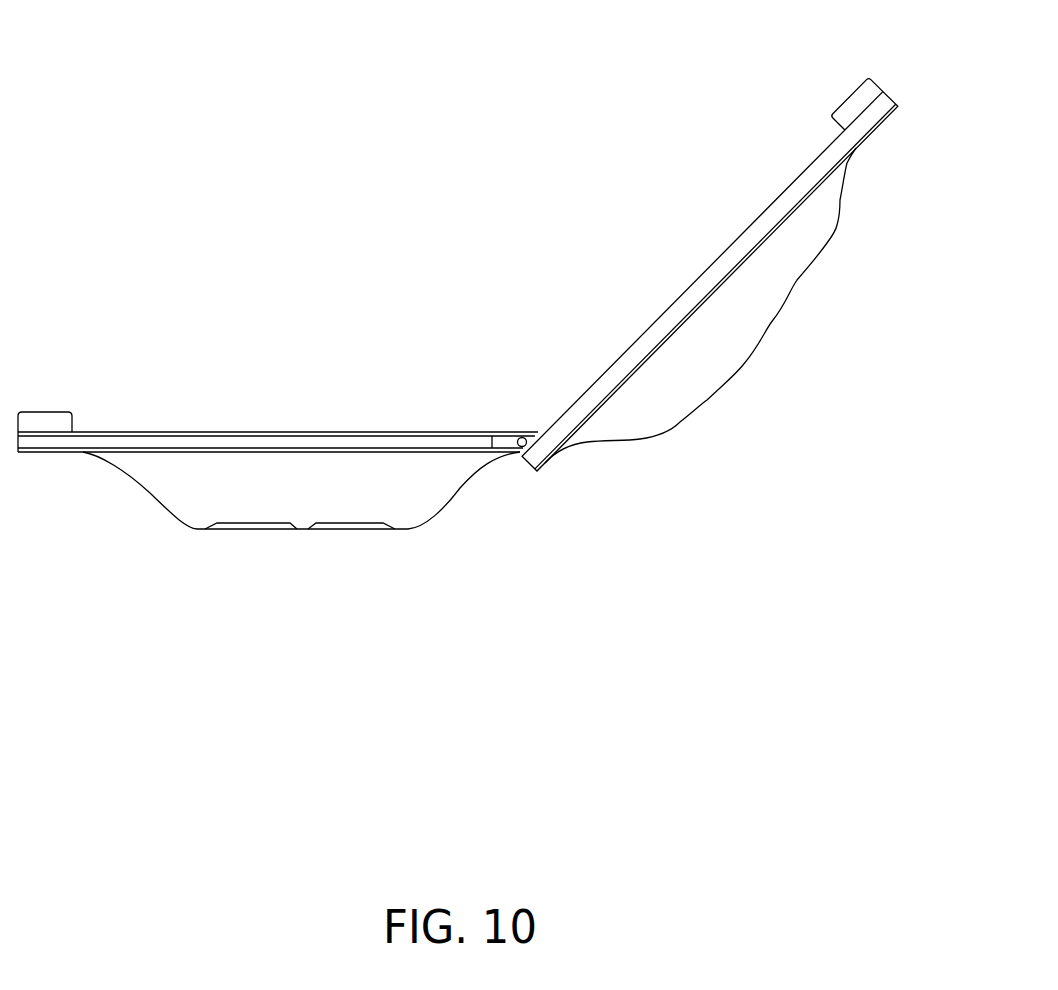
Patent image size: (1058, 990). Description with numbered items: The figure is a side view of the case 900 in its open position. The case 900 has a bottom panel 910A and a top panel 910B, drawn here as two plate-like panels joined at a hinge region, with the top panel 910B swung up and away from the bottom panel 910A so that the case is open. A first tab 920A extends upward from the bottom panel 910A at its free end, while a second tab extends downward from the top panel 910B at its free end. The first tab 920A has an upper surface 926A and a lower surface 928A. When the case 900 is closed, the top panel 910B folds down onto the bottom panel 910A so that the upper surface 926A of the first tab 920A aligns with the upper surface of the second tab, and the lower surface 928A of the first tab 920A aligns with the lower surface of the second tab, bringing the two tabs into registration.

The case 900 is at (68, 166).
The bottom panel 910A is at (176, 524).
The top panel 910B is at (835, 246).
The first tab 920A is at (45, 423).
The upper surface of the first tab 926A is at (48, 412).
The lower surface of the first tab 928A is at (48, 453).